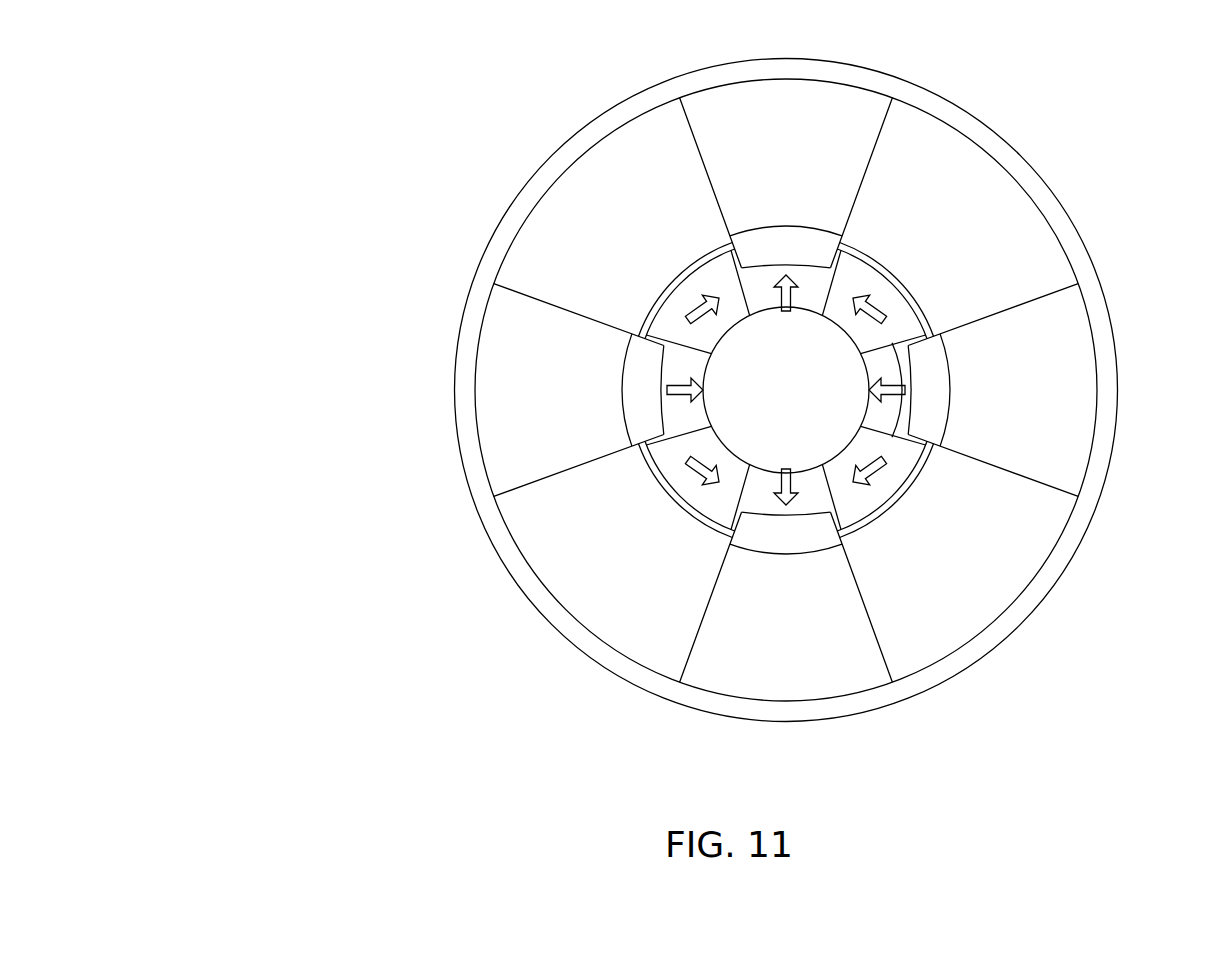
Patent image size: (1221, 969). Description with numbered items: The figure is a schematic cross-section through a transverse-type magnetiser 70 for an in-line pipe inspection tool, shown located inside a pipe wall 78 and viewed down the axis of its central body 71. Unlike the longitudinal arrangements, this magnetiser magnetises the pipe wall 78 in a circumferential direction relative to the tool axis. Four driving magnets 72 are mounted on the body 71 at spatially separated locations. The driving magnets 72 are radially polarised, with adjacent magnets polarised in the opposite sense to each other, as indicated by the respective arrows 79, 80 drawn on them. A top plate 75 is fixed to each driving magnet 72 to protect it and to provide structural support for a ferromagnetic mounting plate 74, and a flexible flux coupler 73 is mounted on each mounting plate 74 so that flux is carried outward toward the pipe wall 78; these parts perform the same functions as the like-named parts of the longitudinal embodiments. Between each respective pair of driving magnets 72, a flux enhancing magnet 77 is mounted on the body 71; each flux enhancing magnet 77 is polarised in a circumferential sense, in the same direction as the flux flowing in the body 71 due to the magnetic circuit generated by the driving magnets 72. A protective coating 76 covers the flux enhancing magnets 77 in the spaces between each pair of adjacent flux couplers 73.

The transverse-type magnetiser 70 is at (372, 113).
The central body 71 is at (835, 442).
The driving magnets 72 is at (807, 292).
The flexible flux coupler 73 is at (1063, 381).
The ferromagnetic mounting plate 74 is at (935, 415).
The top plate 75 is at (925, 329).
The protective coating 76 is at (910, 483).
The flux enhancing magnet 77 is at (912, 293).
The pipe wall 78 is at (985, 137).
The arrow 79 is at (707, 378).
The arrow 80 is at (783, 470).